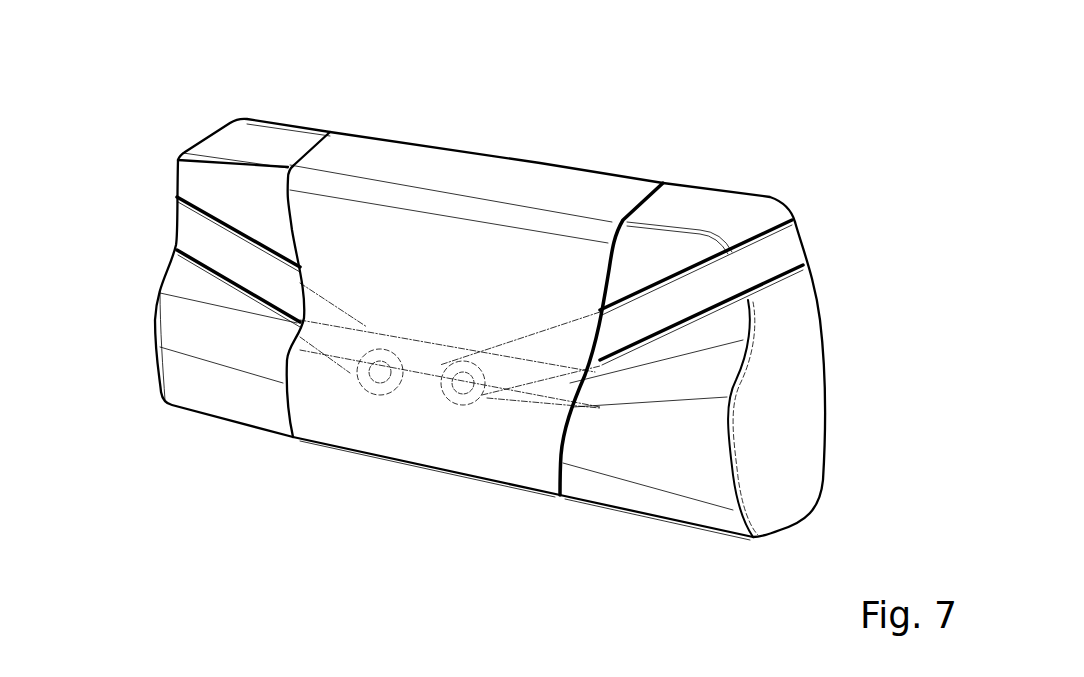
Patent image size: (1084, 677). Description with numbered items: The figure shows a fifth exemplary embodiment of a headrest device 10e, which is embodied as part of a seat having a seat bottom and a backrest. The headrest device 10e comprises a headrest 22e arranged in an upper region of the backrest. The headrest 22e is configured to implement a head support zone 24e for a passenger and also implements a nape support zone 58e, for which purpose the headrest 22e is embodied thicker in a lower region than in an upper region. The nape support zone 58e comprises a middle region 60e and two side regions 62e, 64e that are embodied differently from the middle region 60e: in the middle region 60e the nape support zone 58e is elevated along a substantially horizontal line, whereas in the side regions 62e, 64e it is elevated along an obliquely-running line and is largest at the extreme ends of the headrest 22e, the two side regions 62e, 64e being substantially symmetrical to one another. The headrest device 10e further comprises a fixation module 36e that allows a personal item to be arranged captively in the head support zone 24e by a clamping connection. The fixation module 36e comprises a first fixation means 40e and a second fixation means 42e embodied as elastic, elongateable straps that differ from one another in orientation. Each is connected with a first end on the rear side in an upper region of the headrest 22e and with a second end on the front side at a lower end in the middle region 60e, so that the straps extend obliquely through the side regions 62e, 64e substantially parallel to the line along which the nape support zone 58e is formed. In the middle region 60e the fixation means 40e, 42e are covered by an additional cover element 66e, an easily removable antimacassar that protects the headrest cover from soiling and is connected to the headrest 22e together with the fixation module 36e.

The headrest device 10e is at (143, 223).
The headrest 22e is at (460, 263).
The head support zone 24e is at (388, 258).
The fixation module 36e is at (813, 233).
The first fixation means 40e is at (677, 313).
The second fixation means 42e is at (243, 267).
The nape support zone 58e is at (838, 466).
The middle region 60e is at (413, 477).
The side region 62e is at (625, 518).
The side region 64e is at (230, 434).
The additional cover element 66e is at (567, 268).